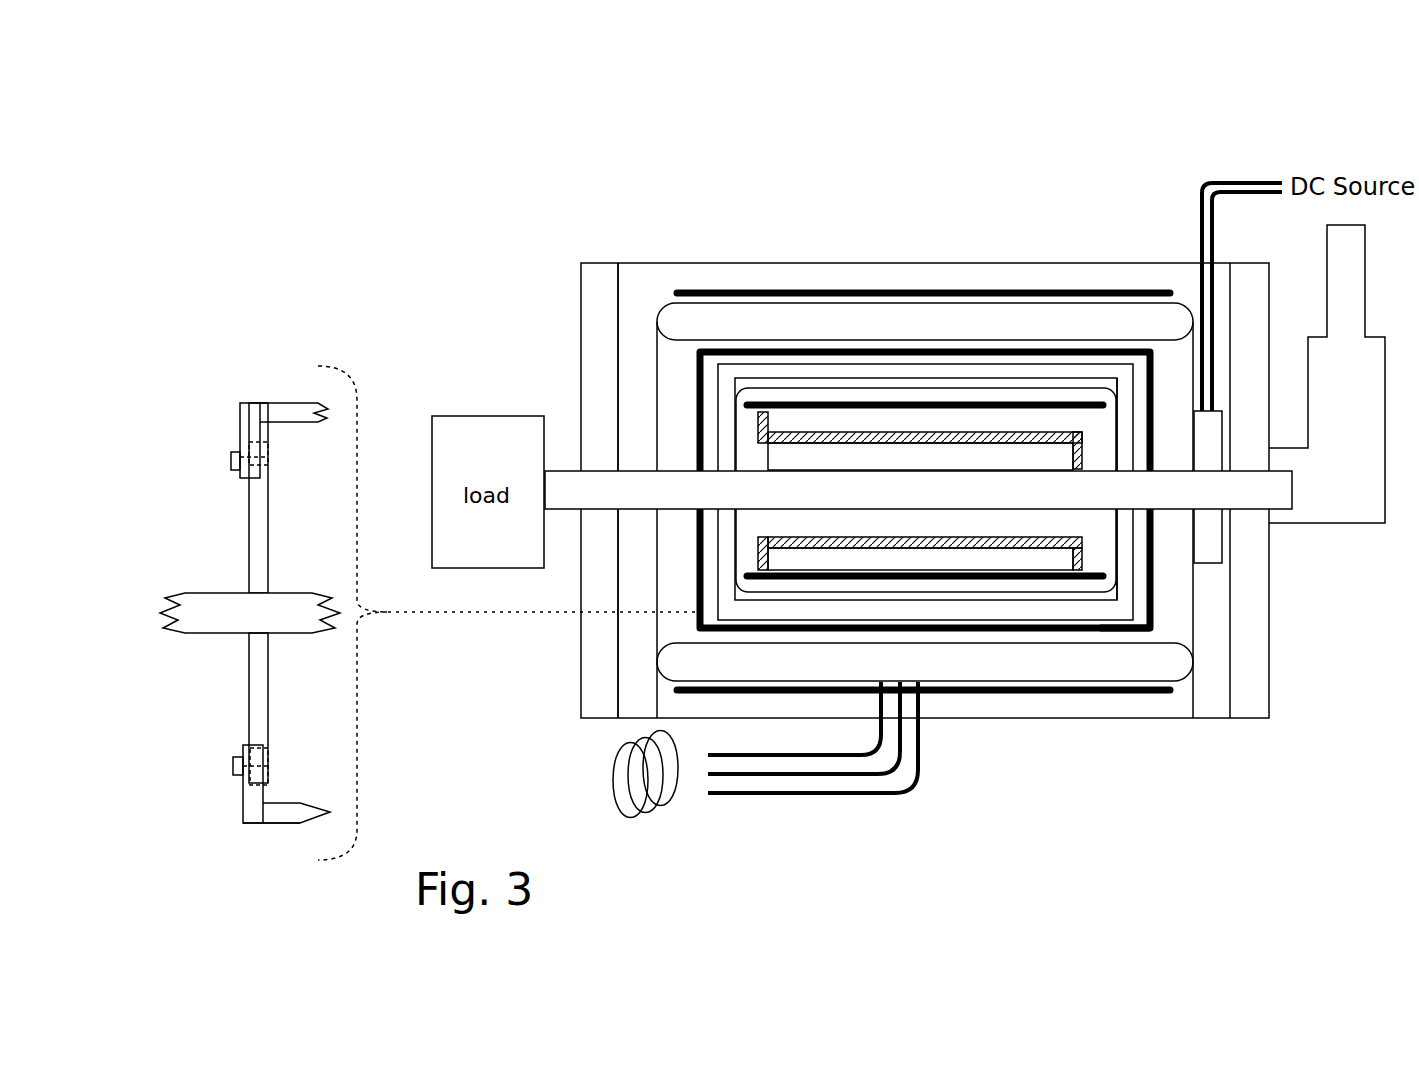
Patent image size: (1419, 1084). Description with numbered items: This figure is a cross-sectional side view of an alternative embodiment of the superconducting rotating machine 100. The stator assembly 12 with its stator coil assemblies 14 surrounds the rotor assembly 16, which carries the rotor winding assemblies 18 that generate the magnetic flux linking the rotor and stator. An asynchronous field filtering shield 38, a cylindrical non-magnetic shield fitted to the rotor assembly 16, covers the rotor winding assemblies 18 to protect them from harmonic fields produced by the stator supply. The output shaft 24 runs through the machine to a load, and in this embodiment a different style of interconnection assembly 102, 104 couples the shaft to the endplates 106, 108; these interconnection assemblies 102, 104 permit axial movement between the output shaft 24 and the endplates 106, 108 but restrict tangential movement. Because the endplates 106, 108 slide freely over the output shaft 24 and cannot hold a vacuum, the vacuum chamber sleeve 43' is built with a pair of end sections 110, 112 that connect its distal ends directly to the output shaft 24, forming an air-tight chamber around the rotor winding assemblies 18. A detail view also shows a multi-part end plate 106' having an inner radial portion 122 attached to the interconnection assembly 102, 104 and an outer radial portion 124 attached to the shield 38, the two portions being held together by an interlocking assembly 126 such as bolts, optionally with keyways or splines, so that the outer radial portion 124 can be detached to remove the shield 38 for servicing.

The superconducting rotating machine 100 is at (199, 74).
The stator assembly 12 is at (813, 272).
The stator coil assemblies 14 is at (1000, 318).
The vacuum chamber sleeve 43' is at (925, 361).
The endplate 106 is at (834, 367).
The end section 110 is at (700, 418).
The rotor assembly 16 is at (970, 560).
The rotor winding assemblies 18 is at (912, 595).
The endplate 108 is at (1153, 582).
The interconnection assembly 104 is at (1158, 518).
The interconnection assembly 102 is at (700, 465).
The end section 112 is at (1112, 602).
The asynchronous field filtering shield 38 is at (1115, 633).
The output shaft 24 is at (597, 480).
The multi-part end plate 106' is at (234, 409).
The inner radial portion 122 is at (250, 718).
The outer radial portion 124 is at (240, 793).
The interlocking assembly 126 is at (243, 750).